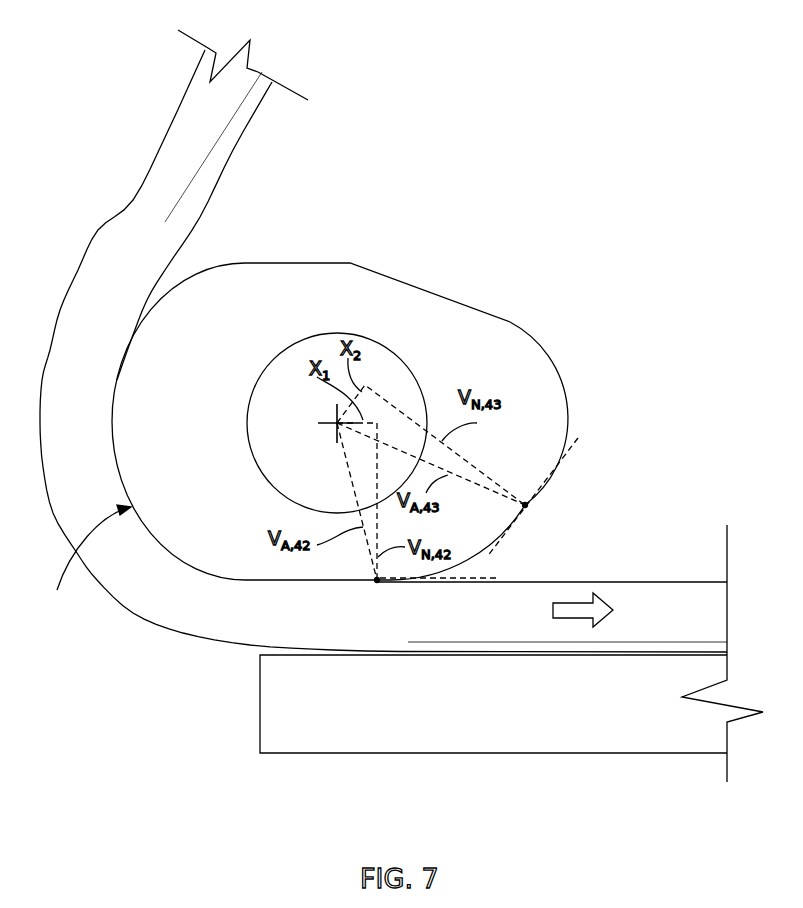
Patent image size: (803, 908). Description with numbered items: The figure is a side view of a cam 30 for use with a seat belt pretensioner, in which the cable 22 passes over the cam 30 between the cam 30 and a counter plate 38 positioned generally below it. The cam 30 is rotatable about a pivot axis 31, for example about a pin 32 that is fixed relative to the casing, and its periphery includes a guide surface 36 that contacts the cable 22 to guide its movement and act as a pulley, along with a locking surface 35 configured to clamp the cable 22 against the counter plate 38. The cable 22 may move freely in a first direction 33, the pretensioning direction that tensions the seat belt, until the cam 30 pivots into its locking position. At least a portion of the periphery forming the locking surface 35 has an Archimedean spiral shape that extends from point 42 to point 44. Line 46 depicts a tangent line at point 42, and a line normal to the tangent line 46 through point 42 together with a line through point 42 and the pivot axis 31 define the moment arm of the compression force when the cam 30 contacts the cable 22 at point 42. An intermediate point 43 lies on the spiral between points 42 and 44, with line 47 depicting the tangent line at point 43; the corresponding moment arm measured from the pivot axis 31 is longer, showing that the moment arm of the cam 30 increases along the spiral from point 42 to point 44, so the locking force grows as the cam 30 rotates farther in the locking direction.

The cable 22 is at (137, 192).
The cam 30 is at (546, 233).
The pivot axis 31 is at (335, 430).
The pin 32 is at (323, 340).
The first direction 33 is at (600, 600).
The locking surface 35 is at (473, 555).
The guide surface 36 is at (87, 563).
The counter plate 38 is at (280, 722).
The point 42 is at (377, 582).
The intermediate point 43 is at (527, 506).
The point 44 is at (567, 425).
The tangent line 46 is at (463, 583).
The tangent line 47 is at (563, 455).